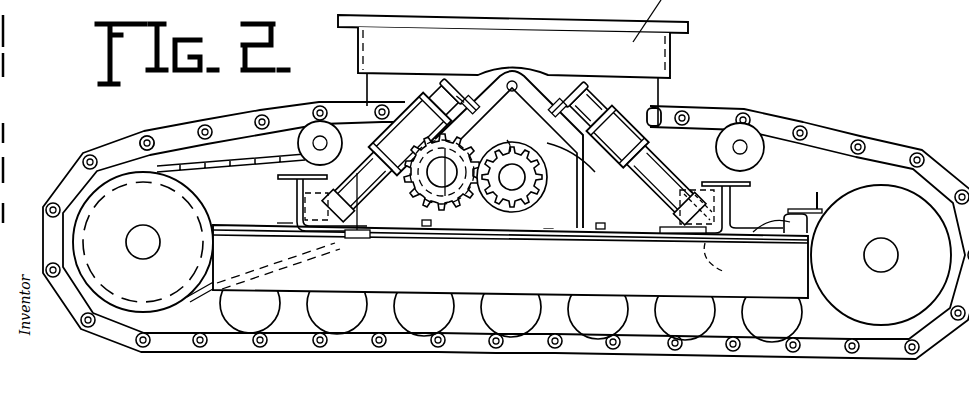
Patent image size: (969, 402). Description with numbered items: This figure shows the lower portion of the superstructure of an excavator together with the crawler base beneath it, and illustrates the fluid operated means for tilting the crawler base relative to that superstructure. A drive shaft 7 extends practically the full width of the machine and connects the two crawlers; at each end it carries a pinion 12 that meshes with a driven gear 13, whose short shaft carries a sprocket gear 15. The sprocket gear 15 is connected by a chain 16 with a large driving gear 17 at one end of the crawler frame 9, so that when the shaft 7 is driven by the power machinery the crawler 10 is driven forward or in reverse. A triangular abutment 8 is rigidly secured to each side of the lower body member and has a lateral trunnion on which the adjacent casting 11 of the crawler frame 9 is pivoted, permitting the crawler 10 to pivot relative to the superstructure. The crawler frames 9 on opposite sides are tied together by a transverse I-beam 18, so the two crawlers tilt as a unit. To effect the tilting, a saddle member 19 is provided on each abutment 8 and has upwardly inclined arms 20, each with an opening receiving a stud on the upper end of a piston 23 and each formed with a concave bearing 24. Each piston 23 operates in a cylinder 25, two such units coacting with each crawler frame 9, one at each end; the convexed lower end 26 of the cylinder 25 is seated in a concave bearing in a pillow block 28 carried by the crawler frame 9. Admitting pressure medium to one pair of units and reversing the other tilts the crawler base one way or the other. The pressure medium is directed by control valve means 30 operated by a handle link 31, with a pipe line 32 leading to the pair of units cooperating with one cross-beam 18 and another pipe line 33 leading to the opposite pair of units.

The drive shaft 7 is at (513, 190).
The triangular abutment 8 is at (594, 200).
The crawler frame 9 is at (735, 258).
The crawler 10 is at (892, 148).
The casting 11 is at (508, 140).
The pinion 12 is at (574, 256).
The driven gear 13 is at (457, 205).
The sprocket gear 15 is at (513, 16).
The chain 16 is at (232, 162).
The driving gear 17 is at (138, 137).
The transverse I-beam 18 is at (277, 178).
The saddle member 19 is at (533, 90).
The inclined arm 20 is at (464, 92).
The piston 23 is at (423, 97).
The concave bearing 24 is at (443, 77).
The cylinder 25 is at (355, 140).
The convexed lower end 26 is at (358, 238).
The pillow block 28 is at (327, 248).
The control valve means 30 is at (808, 224).
The handle link 31 is at (820, 192).
The pipe line 32 is at (677, 176).
The pipe line 33 is at (285, 203).